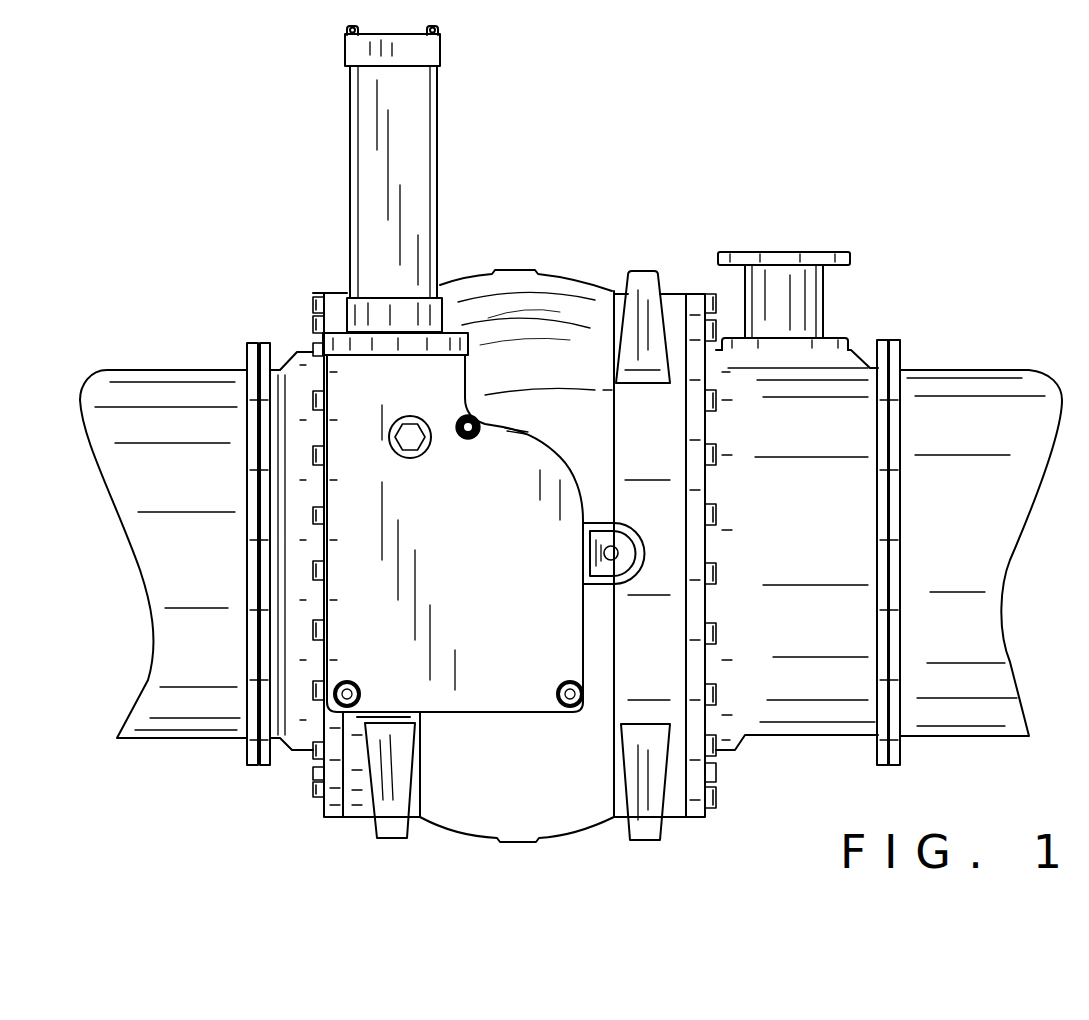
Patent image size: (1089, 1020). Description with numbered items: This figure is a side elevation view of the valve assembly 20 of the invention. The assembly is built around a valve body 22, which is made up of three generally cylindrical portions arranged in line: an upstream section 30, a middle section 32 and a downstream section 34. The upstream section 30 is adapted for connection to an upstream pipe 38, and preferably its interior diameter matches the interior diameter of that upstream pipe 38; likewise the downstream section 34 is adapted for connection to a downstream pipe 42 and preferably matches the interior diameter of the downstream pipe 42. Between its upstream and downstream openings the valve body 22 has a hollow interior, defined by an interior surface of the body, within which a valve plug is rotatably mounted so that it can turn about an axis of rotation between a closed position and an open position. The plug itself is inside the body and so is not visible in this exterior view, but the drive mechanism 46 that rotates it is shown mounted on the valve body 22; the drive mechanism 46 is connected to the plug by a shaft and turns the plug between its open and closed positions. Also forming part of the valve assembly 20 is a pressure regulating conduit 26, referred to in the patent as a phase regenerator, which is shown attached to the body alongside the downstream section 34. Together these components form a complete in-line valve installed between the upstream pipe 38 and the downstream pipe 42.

The valve assembly 20 is at (571, 434).
The valve body 22 is at (514, 516).
The pressure regulating conduit 26 is at (772, 249).
The upstream section 30 is at (292, 352).
The middle section 32 is at (548, 320).
The downstream section 34 is at (835, 375).
The upstream pipe 38 is at (183, 393).
The downstream pipe 42 is at (978, 387).
The drive mechanism 46 is at (363, 637).